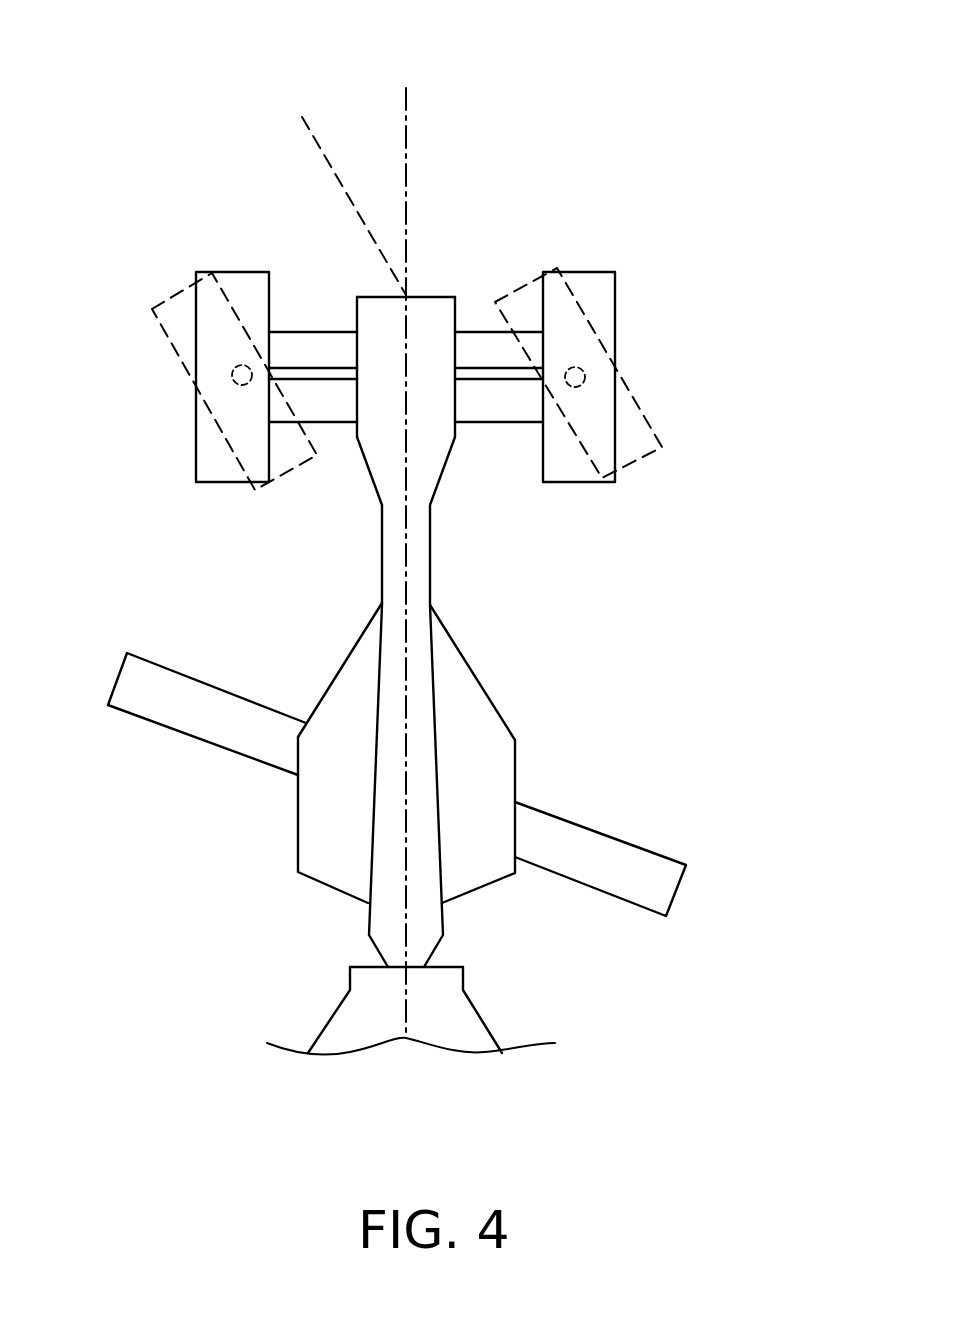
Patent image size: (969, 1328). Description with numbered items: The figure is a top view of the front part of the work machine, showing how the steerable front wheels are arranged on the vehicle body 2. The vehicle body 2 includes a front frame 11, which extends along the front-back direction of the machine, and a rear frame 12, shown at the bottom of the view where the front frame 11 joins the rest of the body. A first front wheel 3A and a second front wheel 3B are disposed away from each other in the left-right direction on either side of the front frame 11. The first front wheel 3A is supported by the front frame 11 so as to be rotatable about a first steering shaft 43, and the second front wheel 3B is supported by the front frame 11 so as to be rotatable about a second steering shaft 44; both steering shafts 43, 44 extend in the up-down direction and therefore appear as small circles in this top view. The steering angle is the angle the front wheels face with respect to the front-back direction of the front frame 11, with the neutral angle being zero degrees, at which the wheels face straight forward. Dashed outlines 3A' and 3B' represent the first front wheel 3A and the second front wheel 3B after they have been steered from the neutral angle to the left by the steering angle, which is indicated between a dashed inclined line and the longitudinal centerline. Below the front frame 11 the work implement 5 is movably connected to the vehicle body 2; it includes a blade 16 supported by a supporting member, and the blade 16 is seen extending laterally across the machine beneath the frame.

The vehicle body 2 is at (527, 125).
The first front wheel 3A is at (276, 331).
The first front wheel steered to the left 3A' is at (209, 354).
The second front wheel 3B is at (535, 331).
The second front wheel steered to the left 3B' is at (560, 338).
The first steering shaft 43 is at (232, 375).
The second steering shaft 44 is at (585, 377).
The front frame 11 is at (430, 557).
The work implement 5 is at (577, 718).
The blade 16 is at (622, 882).
The rear frame 12 is at (352, 1008).